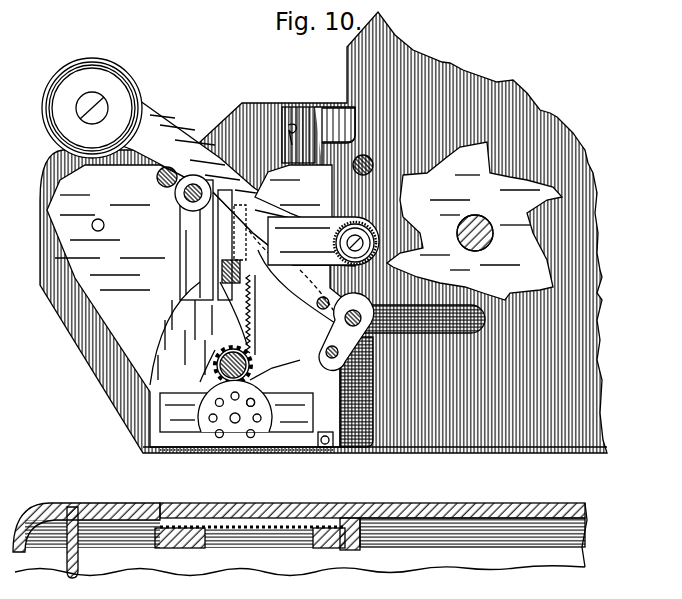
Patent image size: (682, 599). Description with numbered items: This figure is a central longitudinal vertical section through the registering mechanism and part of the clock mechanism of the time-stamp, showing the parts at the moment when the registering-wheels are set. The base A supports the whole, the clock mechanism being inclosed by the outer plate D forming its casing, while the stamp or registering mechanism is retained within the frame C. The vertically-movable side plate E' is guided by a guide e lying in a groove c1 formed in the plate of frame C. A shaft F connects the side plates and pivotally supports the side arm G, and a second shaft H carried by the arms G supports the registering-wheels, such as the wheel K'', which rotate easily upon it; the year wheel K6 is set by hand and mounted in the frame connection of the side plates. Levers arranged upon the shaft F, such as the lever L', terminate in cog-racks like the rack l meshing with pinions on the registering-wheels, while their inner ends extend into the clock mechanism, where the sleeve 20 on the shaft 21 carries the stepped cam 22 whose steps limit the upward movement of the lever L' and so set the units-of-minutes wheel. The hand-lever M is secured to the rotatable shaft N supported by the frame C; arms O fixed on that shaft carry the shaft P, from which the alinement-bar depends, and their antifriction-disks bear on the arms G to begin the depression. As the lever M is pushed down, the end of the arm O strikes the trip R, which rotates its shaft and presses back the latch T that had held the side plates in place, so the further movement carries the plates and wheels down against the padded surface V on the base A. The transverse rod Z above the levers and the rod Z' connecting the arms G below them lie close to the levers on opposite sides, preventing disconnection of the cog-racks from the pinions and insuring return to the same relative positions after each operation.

The outer plate D is at (527, 102).
The frame C is at (60, 303).
The hand-lever M is at (175, 120).
The shaft P is at (256, 202).
The side plate E' is at (110, 239).
The latch T is at (182, 282).
The trip R is at (192, 212).
The cog-rack l is at (262, 255).
The guide e is at (295, 277).
The transverse rod Z is at (315, 291).
The side arm G is at (280, 346).
The registering-wheel K'' is at (198, 333).
The shaft H is at (222, 366).
The registering-wheel K6 is at (263, 422).
The arm O is at (308, 215).
The rotatable shaft N is at (346, 243).
The groove c1 is at (297, 108).
The pin y is at (372, 150).
The sleeve 20 is at (486, 224).
The shaft 21 is at (486, 240).
The cam 22 is at (510, 300).
The lever L' is at (423, 343).
The shaft F is at (356, 330).
The rod Z' is at (333, 341).
The padded surface V is at (222, 503).
The base A is at (456, 504).